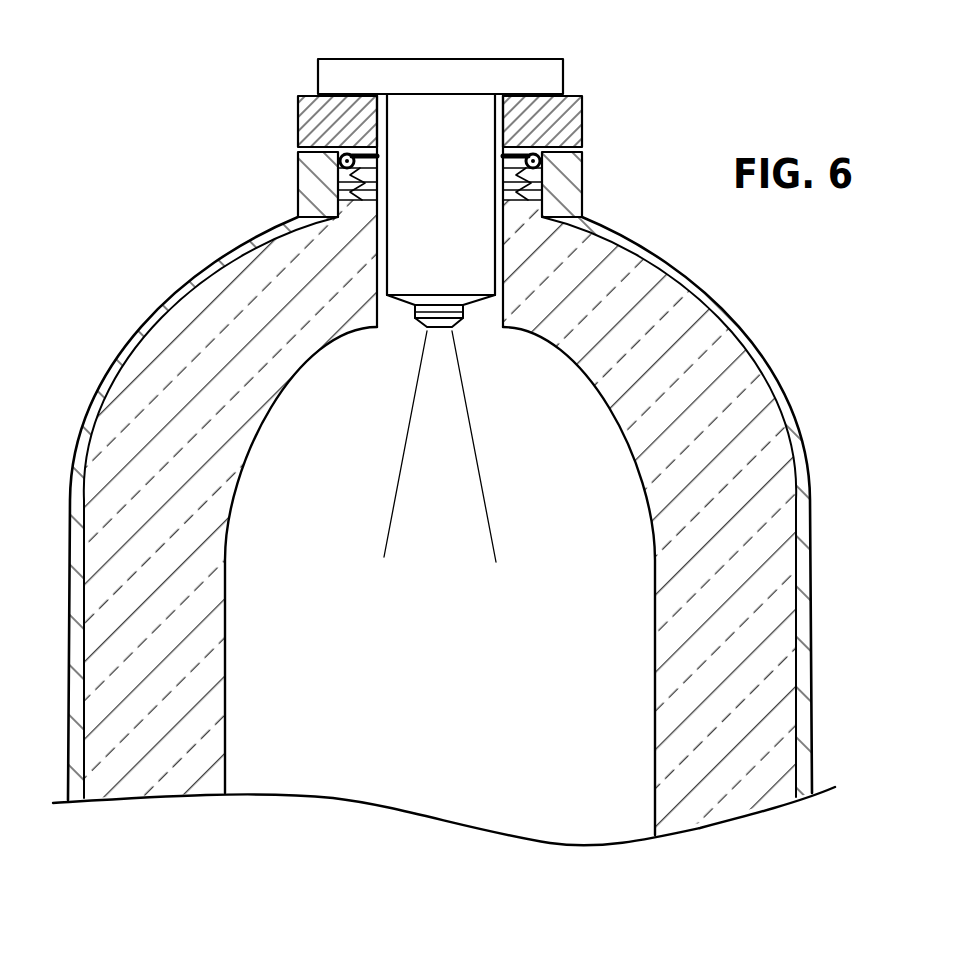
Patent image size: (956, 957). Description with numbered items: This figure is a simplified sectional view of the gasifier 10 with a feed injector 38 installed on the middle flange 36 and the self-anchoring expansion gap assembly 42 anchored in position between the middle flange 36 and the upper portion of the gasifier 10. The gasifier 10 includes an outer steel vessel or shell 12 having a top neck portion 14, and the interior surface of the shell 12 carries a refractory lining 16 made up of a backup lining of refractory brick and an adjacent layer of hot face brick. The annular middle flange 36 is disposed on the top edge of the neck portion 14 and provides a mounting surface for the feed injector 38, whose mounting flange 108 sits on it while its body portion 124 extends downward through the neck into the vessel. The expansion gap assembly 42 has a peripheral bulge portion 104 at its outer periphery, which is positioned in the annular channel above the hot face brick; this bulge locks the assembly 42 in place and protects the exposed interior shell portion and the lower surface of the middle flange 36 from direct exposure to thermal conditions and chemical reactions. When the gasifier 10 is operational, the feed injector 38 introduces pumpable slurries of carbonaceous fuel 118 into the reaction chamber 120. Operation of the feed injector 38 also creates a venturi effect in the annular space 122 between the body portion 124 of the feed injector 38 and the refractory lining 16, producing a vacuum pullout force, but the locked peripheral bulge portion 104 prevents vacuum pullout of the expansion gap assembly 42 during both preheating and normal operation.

The gasifier 10 is at (140, 243).
The outer steel vessel or shell 12 is at (128, 337).
The top neck portion 14 is at (298, 182).
The refractory lining 16 is at (440, 517).
The annular middle flange 36 is at (298, 133).
The feed injector 38 is at (462, 51).
The self-anchoring expansion gap assembly 42 is at (522, 143).
The peripheral bulge portion 104 is at (542, 169).
The mounting flange 108 is at (513, 76).
The pumpable slurries of carbonaceous fuel 118 is at (478, 463).
The reaction chamber 120 is at (460, 670).
The annular space 122 is at (382, 290).
The body portion 124 is at (460, 221).